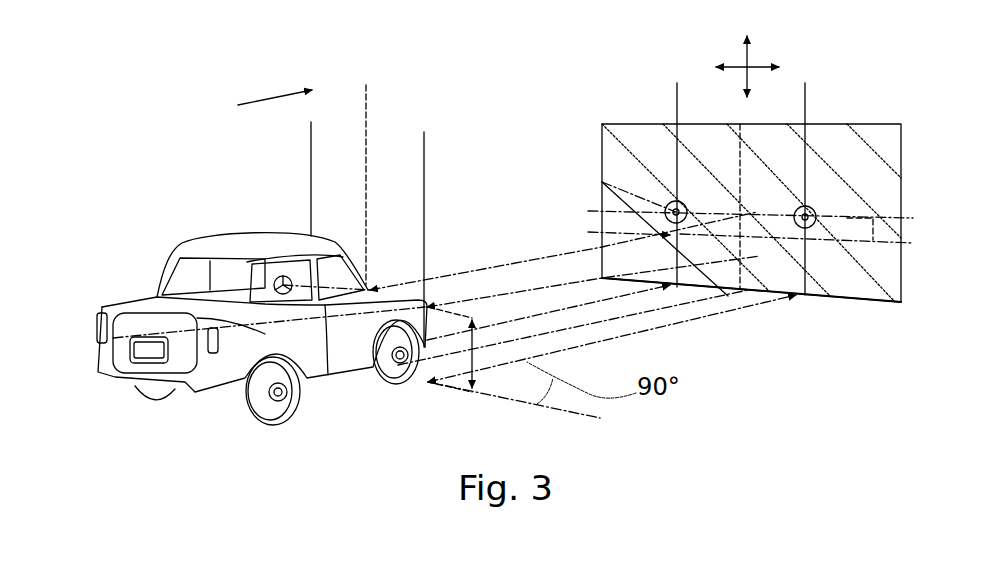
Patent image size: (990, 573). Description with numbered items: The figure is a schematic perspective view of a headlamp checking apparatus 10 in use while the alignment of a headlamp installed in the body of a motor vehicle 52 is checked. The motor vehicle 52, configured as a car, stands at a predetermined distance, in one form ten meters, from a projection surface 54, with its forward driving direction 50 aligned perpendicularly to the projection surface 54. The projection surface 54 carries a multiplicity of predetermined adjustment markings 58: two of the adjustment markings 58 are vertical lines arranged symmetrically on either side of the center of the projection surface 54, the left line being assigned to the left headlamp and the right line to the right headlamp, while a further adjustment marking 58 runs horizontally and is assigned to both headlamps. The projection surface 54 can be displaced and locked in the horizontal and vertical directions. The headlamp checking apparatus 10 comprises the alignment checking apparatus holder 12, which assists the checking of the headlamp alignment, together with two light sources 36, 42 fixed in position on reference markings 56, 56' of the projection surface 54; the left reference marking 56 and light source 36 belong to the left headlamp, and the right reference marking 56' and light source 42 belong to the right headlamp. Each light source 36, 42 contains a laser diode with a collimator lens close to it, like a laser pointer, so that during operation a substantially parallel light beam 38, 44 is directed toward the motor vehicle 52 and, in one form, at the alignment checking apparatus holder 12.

The forward driving direction 50 is at (268, 99).
The motor vehicle 52 is at (188, 246).
The headlamp checking apparatus 10 is at (395, 185).
The alignment checking apparatus holder 12 is at (379, 249).
The parallel light beam 38 is at (480, 270).
The parallel light beam 44 is at (700, 262).
The reference marking 56 is at (630, 203).
The light source 36 is at (600, 181).
The adjustment markings 58 is at (670, 89).
The projection surface 54 is at (908, 144).
The reference marking 56' is at (796, 282).
The light source 42 is at (801, 241).